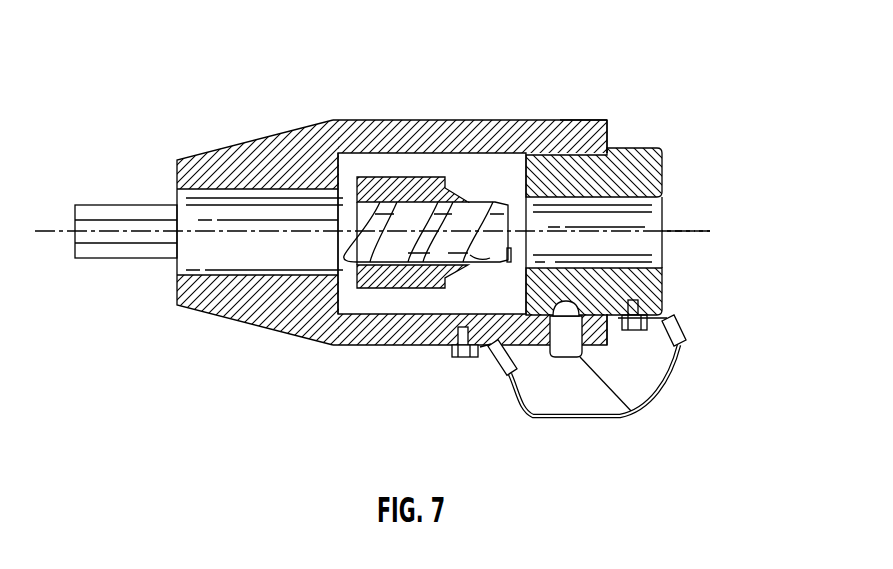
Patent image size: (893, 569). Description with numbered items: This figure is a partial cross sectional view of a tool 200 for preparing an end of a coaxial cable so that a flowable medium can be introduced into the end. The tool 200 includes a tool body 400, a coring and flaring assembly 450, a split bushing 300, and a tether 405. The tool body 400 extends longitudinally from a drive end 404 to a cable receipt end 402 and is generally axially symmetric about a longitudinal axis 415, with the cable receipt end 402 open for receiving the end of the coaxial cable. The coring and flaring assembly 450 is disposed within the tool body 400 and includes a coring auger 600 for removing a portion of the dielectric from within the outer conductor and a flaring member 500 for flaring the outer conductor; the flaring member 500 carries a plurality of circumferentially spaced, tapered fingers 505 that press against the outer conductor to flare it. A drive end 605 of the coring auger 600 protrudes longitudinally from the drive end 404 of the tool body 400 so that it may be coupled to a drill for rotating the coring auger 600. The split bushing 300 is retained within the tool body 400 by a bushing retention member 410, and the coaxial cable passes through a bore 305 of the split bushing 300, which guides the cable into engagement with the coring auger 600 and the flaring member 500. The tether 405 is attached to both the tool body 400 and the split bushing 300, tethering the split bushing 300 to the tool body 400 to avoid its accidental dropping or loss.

The tool 200 is at (523, 77).
The split bushing 300 is at (635, 162).
The bore 305 is at (652, 245).
The tool body 400 is at (400, 130).
The cable receipt end 402 is at (590, 128).
The drive end 404 is at (190, 162).
The tether 405 is at (527, 415).
The bushing retention member 410 is at (633, 413).
The longitudinal axis 415 is at (687, 228).
The coring and flaring assembly 450 is at (207, 202).
The flaring member 500 is at (405, 283).
The fingers 505 is at (458, 192).
The coring auger 600 is at (288, 262).
The drive end 605 is at (137, 212).